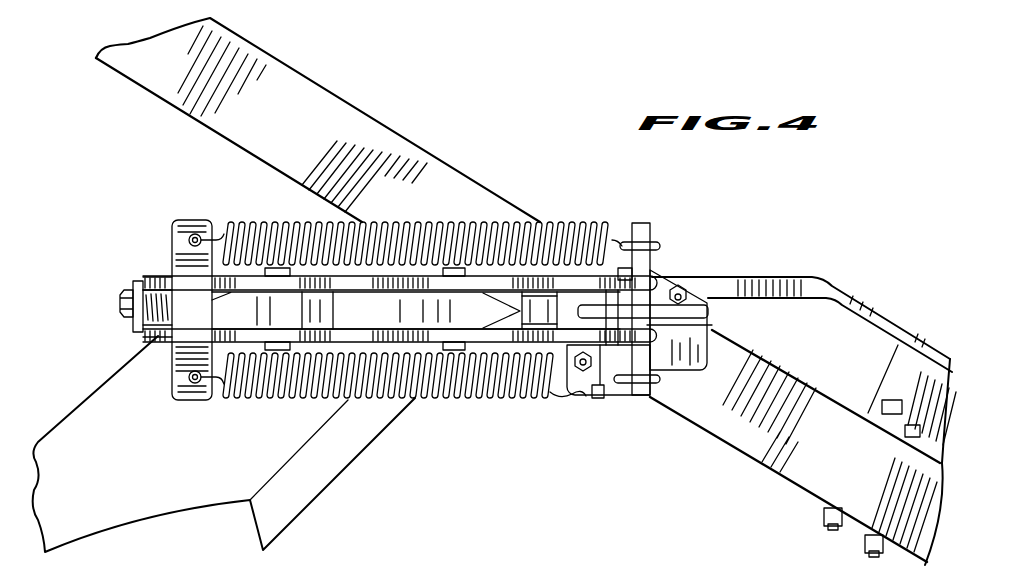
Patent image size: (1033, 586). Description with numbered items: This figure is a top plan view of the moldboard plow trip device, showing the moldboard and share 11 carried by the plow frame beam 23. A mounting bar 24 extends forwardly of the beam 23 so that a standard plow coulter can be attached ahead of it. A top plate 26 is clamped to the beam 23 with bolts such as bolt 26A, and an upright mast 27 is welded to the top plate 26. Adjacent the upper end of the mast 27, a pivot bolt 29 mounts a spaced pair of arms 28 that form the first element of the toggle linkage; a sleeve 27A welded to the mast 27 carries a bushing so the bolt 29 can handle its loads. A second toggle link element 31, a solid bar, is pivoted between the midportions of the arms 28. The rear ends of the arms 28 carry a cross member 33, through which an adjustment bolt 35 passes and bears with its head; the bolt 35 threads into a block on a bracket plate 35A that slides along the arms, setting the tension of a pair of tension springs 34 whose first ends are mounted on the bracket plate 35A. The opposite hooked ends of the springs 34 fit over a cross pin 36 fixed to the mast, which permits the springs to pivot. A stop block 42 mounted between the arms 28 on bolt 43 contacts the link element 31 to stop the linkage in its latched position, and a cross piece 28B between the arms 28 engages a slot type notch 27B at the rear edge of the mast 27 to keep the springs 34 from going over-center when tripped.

The moldboard and share 11 is at (136, 508).
The plow frame beam 23 is at (812, 465).
The mounting bar 24 is at (800, 282).
The top plate 26 is at (700, 371).
The bolt 26A is at (570, 400).
The mast 27 is at (712, 311).
The sleeve 27A is at (712, 327).
The slot type notch 27B is at (605, 400).
The arms 28 is at (360, 283).
The cross piece 28B is at (537, 298).
The pivot bolt 29 is at (642, 270).
The second toggle link element 31 is at (413, 305).
The cross member 33 is at (137, 283).
The tension springs 34 is at (594, 221).
The adjustment bolt 35 is at (120, 305).
The bracket plate 35A is at (182, 402).
The cross pin 36 is at (648, 224).
The stop block 42 is at (277, 302).
The bolt 43 is at (265, 398).